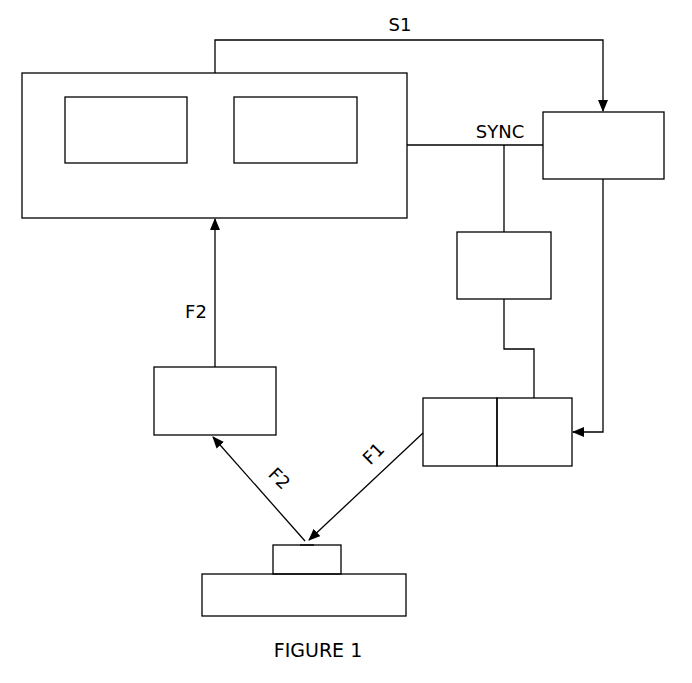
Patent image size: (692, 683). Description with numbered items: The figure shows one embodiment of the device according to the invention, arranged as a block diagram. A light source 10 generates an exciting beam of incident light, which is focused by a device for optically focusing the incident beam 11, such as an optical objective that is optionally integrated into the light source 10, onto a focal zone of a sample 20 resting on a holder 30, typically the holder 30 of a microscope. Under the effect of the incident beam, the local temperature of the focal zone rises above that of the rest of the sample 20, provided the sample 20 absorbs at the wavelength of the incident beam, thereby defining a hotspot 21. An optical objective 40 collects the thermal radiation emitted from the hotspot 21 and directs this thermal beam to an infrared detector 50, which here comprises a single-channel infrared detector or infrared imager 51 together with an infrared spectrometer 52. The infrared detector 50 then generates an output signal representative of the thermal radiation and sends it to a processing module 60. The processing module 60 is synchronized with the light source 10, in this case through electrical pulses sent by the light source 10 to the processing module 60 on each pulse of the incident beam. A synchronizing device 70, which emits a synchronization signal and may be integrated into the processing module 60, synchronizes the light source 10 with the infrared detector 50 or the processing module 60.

The light source 10 is at (534, 432).
The device for optically focusing the incident beam 11 is at (460, 432).
The sample 20 is at (307, 559).
The hotspot 21 is at (306, 521).
The holder 30 is at (304, 595).
The optical objective 40 is at (215, 401).
The infrared detector 50 is at (214, 145).
The infrared imager 51 is at (126, 130).
The infrared spectrometer 52 is at (295, 130).
The processing module 60 is at (603, 145).
The synchronizing device 70 is at (504, 265).